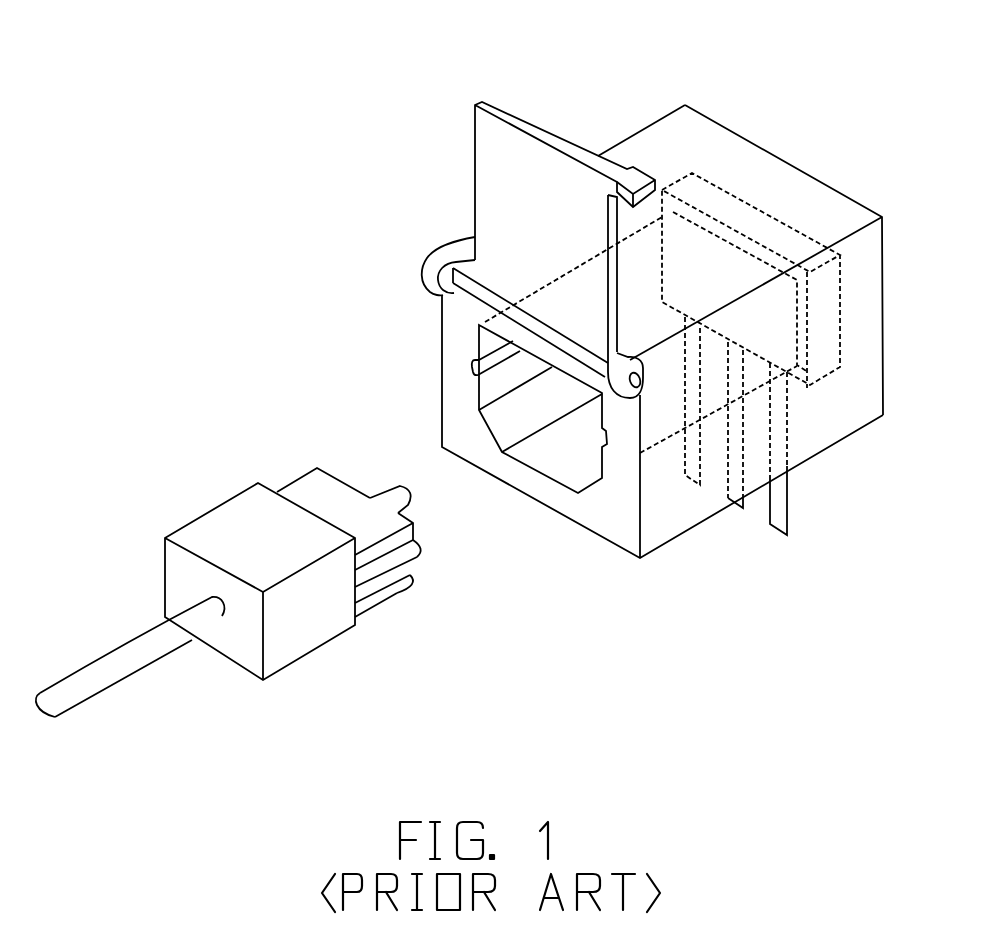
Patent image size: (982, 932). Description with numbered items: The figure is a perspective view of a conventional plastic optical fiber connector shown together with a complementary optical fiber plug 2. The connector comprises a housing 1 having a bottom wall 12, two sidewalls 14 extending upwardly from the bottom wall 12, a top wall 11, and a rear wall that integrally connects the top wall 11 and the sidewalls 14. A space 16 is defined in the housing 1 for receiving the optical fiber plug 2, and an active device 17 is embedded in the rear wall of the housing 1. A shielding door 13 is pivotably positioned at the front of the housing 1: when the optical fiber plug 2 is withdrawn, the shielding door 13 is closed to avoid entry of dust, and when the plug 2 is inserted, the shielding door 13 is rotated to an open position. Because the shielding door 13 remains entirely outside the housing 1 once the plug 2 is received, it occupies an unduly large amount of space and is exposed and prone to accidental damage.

The housing 1 is at (718, 102).
The optical fiber plug 2 is at (227, 530).
The top wall 11 is at (757, 183).
The bottom wall 12 is at (570, 500).
The shielding door 13 is at (507, 140).
The sidewalls 14 is at (463, 345).
The space 16 is at (558, 440).
The active device 17 is at (832, 372).